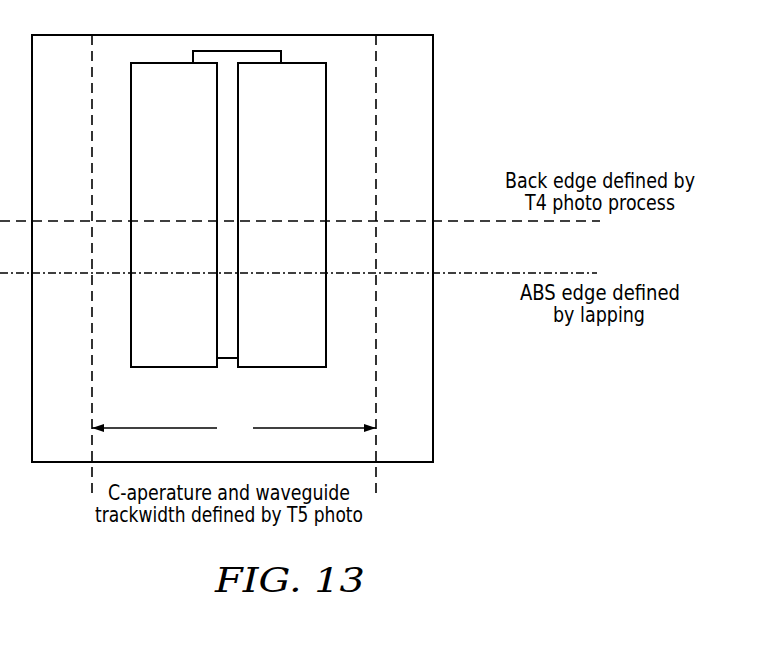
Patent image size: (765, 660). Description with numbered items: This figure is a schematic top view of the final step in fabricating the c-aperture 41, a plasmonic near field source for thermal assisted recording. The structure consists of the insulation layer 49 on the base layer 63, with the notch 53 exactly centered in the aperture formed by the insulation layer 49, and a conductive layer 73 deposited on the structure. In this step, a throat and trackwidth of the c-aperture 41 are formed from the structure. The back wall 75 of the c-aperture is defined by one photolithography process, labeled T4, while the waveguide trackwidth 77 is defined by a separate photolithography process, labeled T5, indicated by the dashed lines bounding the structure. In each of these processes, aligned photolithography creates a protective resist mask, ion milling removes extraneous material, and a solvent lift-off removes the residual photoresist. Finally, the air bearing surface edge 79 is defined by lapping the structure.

The c-aperture 41 is at (474, 254).
The insulation layer 49 is at (315, 253).
The notch 53 is at (225, 247).
The base layer 63 is at (363, 230).
The conductive layer 73 is at (300, 265).
The back wall 75 is at (301, 215).
The waveguide trackwidth 77 is at (234, 431).
The air bearing surface (ABS) edge 79 is at (293, 273).